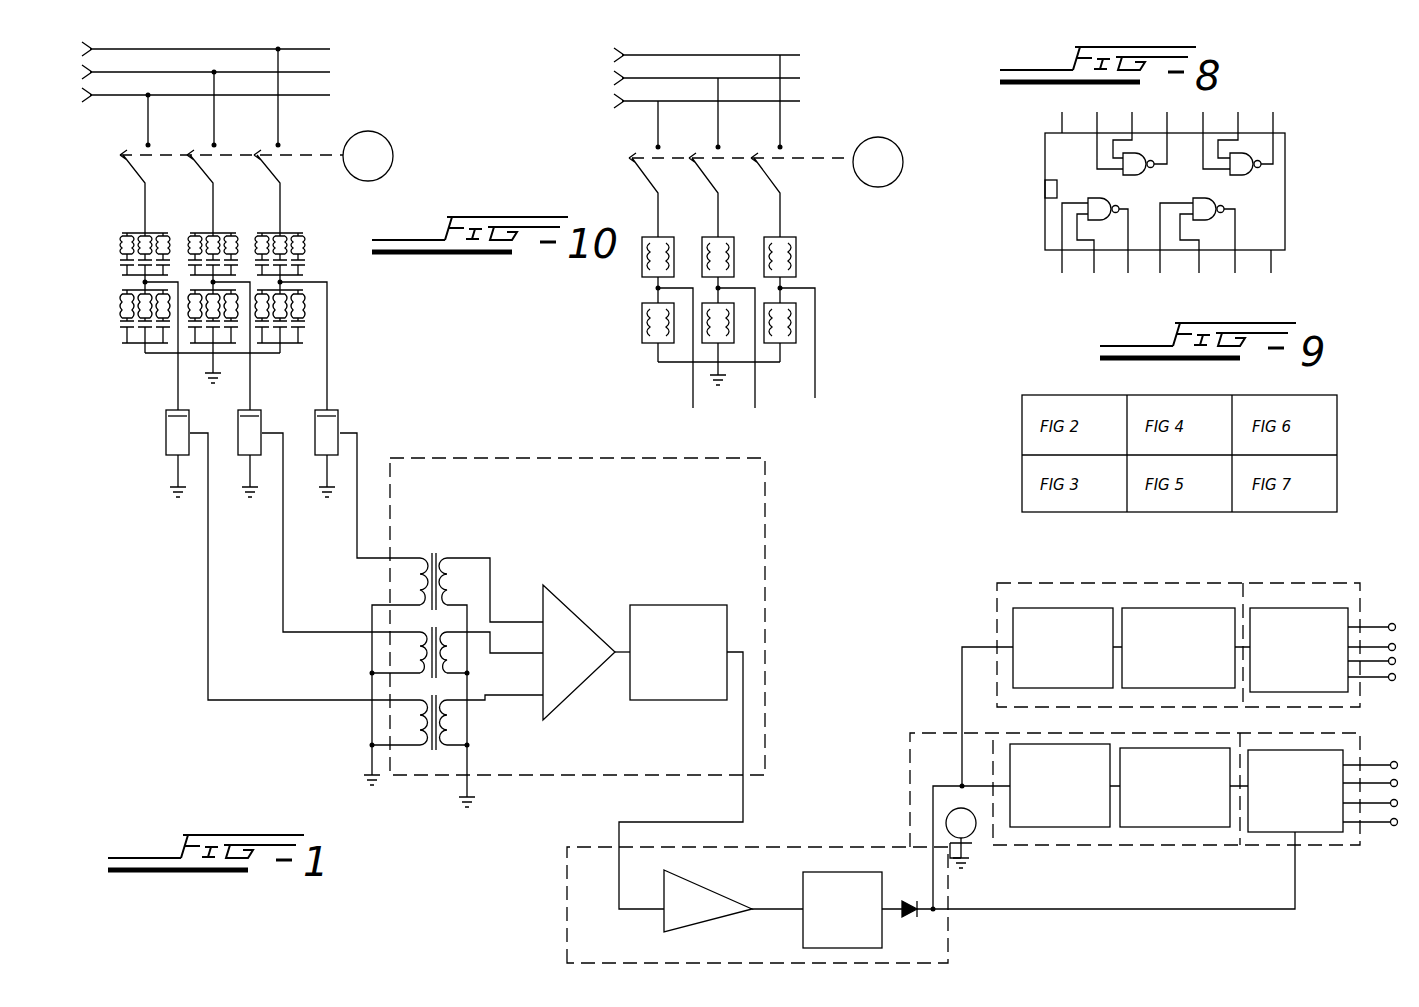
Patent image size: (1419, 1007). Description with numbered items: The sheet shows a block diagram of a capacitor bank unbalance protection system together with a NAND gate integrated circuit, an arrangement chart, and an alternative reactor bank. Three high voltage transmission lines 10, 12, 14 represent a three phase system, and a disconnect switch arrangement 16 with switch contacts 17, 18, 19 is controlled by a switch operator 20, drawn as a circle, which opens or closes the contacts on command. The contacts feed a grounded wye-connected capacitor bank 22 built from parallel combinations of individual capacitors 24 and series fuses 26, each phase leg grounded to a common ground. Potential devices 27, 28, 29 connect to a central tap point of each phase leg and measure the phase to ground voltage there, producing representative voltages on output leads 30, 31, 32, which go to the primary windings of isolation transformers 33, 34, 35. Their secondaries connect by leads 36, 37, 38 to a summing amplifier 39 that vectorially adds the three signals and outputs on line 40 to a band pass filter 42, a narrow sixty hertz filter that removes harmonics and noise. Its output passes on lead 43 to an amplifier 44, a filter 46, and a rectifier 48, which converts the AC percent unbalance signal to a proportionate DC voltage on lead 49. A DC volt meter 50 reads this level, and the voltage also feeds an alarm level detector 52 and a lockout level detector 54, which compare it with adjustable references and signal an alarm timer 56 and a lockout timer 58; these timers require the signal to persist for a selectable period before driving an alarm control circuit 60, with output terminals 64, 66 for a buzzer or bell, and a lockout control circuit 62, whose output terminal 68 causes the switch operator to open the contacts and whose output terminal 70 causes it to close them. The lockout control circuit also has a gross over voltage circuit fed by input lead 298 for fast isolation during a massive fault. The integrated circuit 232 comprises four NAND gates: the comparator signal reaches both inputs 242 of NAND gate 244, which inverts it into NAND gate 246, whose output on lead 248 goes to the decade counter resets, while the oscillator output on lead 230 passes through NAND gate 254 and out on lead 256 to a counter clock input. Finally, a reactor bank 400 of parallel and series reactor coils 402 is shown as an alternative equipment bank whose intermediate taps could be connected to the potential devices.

In FIG. 1, the high voltage transmission line 10 is at (318, 49).
In FIG. 10, the high voltage transmission line 10 is at (795, 55).
In FIG. 1, the high voltage transmission line 12 is at (318, 72).
In FIG. 10, the high voltage transmission line 12 is at (795, 78).
In FIG. 1, the high voltage transmission line 14 is at (318, 95).
In FIG. 10, the high voltage transmission line 14 is at (795, 101).
In FIG. 1, the disconnect switch arrangement 16 is at (116, 167).
In FIG. 1, the switch contact 17 is at (133, 165).
In FIG. 10, the switch contact 17 is at (656, 192).
In FIG. 1, the switch contact 18 is at (208, 172).
In FIG. 10, the switch contact 18 is at (716, 192).
In FIG. 1, the switch contact 19 is at (280, 178).
In FIG. 10, the switch contact 19 is at (778, 188).
In FIG. 1, the switch operator 20 is at (392, 166).
In FIG. 10, the switch operator 20 is at (900, 170).
In FIG. 1, the grounded wye-connected capacitor bank 22 is at (245, 308).
In FIG. 1, the capacitor 24 is at (306, 320).
In FIG. 1, the series fuse 26 is at (305, 305).
In FIG. 1, the potential device 27 is at (167, 428).
In FIG. 1, the potential device 28 is at (240, 432).
In FIG. 1, the potential device 29 is at (345, 432).
In FIG. 1, the output lead 30 is at (210, 585).
In FIG. 1, the output lead 31 is at (285, 585).
In FIG. 1, the output lead 32 is at (357, 538).
In FIG. 1, the isolation transformer 33 is at (450, 548).
In FIG. 1, the isolation transformer 34 is at (402, 652).
In FIG. 1, the isolation transformer 35 is at (405, 725).
In FIG. 1, the lead 36 is at (497, 618).
In FIG. 1, the lead 37 is at (497, 657).
In FIG. 1, the lead 38 is at (495, 695).
In FIG. 1, the summing amplifier 39 is at (570, 611).
In FIG. 1, the line 40 is at (624, 648).
In FIG. 1, the band pass filter 42 is at (686, 605).
In FIG. 1, the lead 43 is at (742, 742).
In FIG. 1, the amplifier 44 is at (714, 888).
In FIG. 1, the filter 46 is at (845, 872).
In FIG. 1, the rectifier 48 is at (908, 900).
In FIG. 1, the lead 49 is at (948, 890).
In FIG. 1, the DC volt meter 50 is at (972, 832).
In FIG. 1, the alarm level detector 52 is at (1078, 608).
In FIG. 1, the lockout level detector 54 is at (1085, 827).
In FIG. 1, the alarm timer 56 is at (1155, 608).
In FIG. 1, the lockout timer 58 is at (1185, 827).
In FIG. 1, the alarm control circuit 60 is at (1300, 608).
In FIG. 1, the lockout control circuit 62 is at (1322, 835).
In FIG. 1, the output terminal 64 is at (1389, 643).
In FIG. 1, the output terminal 66 is at (1389, 666).
In FIG. 1, the output terminal 68 is at (1391, 808).
In FIG. 1, the output terminal 70 is at (1391, 779).
In FIG. 1, the input lead 298 is at (1262, 912).
In FIG. 10, the reactor bank 400 is at (735, 322).
In FIG. 10, the reactor coil 402 is at (800, 332).
In FIG. 8, the lead 230 is at (1203, 112).
In FIG. 8, the integrated circuit 232 is at (1285, 220).
In FIG. 8, the inputs 242 is at (1062, 273).
In FIG. 8, the NAND gate 244 is at (1097, 208).
In FIG. 8, the NAND gate 246 is at (1202, 210).
In FIG. 8, the lead 248 is at (1235, 273).
In FIG. 8, the NAND gate 254 is at (1262, 164).
In FIG. 8, the lead 256 is at (1273, 115).